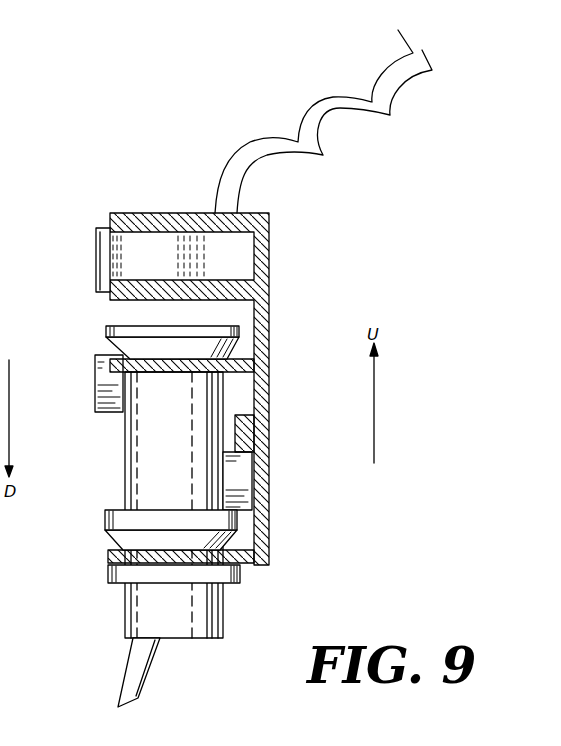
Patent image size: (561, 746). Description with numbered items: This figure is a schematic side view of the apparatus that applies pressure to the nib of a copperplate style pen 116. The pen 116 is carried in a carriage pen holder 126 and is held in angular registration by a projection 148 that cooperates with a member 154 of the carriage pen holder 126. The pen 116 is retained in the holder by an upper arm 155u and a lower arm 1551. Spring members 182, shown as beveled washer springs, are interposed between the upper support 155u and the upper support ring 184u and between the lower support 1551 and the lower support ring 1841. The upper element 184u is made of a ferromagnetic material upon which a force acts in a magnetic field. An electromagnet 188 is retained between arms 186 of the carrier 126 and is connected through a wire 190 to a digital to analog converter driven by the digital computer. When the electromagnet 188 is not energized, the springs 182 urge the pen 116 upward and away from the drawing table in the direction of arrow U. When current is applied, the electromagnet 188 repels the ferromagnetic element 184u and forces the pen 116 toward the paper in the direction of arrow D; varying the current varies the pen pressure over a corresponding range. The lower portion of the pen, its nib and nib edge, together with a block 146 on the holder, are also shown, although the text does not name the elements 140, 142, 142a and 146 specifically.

The pen 116 is at (93, 524).
The carriage pen holder 126 is at (269, 277).
The cutter assembly 140 is at (110, 662).
The blade 142 is at (118, 707).
The blade edge 142a is at (140, 690).
The left block 146 is at (100, 392).
The projection 148 is at (237, 480).
The member 154 is at (250, 432).
The upper arm 155u is at (237, 354).
The lower arm 1551 is at (243, 578).
The spring members 182 is at (115, 358).
The upper support ring 184u is at (112, 326).
The lower support ring 1841 is at (108, 578).
The arms 186 is at (131, 213).
The electromagnet 188 is at (106, 246).
The wire 190 is at (325, 109).